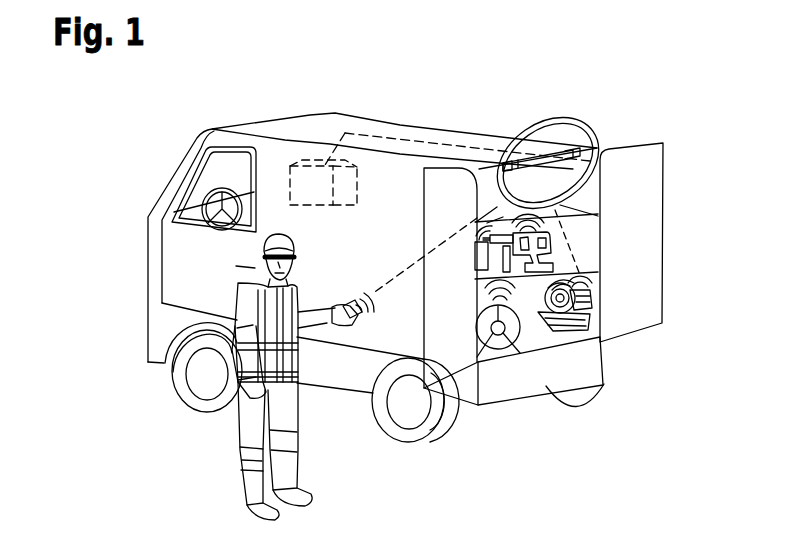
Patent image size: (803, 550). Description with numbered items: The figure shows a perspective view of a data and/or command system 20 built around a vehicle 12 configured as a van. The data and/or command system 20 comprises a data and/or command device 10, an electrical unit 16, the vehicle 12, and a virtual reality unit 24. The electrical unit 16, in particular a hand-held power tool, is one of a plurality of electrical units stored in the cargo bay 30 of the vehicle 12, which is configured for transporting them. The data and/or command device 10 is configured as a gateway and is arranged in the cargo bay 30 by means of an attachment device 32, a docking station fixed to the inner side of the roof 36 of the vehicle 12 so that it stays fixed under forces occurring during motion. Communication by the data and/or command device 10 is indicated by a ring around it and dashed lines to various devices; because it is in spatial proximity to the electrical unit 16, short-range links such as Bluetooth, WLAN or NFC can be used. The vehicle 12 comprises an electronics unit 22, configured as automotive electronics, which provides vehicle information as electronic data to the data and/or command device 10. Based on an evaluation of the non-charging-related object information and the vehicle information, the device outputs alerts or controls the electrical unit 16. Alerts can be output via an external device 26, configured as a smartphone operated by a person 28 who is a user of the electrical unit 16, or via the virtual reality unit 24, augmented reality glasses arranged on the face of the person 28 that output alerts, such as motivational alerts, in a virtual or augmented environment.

The data and/or command device 10 is at (562, 157).
The vehicle 12 is at (157, 257).
The electrical unit 16 is at (547, 315).
The data and/or command system 20 is at (132, 146).
The electronics unit 22 is at (287, 185).
The virtual reality unit 24 is at (258, 292).
The external device 26 is at (357, 323).
The person 28 is at (247, 478).
The cargo bay 30 is at (583, 237).
The attachment device 32 is at (513, 167).
The roof 36 is at (397, 129).